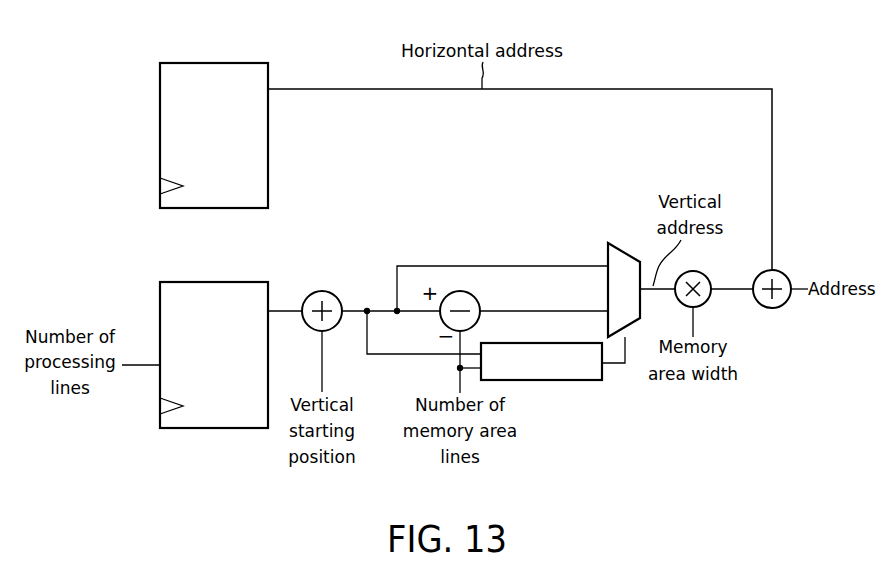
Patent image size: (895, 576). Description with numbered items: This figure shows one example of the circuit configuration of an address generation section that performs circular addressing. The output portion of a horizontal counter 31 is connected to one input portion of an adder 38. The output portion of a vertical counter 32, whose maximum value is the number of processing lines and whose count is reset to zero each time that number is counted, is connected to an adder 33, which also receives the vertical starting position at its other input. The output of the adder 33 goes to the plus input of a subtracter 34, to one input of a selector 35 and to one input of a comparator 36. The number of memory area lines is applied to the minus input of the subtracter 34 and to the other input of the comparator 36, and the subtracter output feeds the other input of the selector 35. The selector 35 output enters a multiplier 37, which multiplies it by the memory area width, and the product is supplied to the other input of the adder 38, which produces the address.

The horizontal counter 31 is at (213, 63).
The vertical counter 32 is at (213, 282).
The adder 33 is at (335, 297).
The subtracter 34 is at (479, 296).
The selector 35 is at (616, 243).
The comparator 36 is at (583, 385).
The multiplier 37 is at (707, 302).
The adder 38 is at (782, 273).